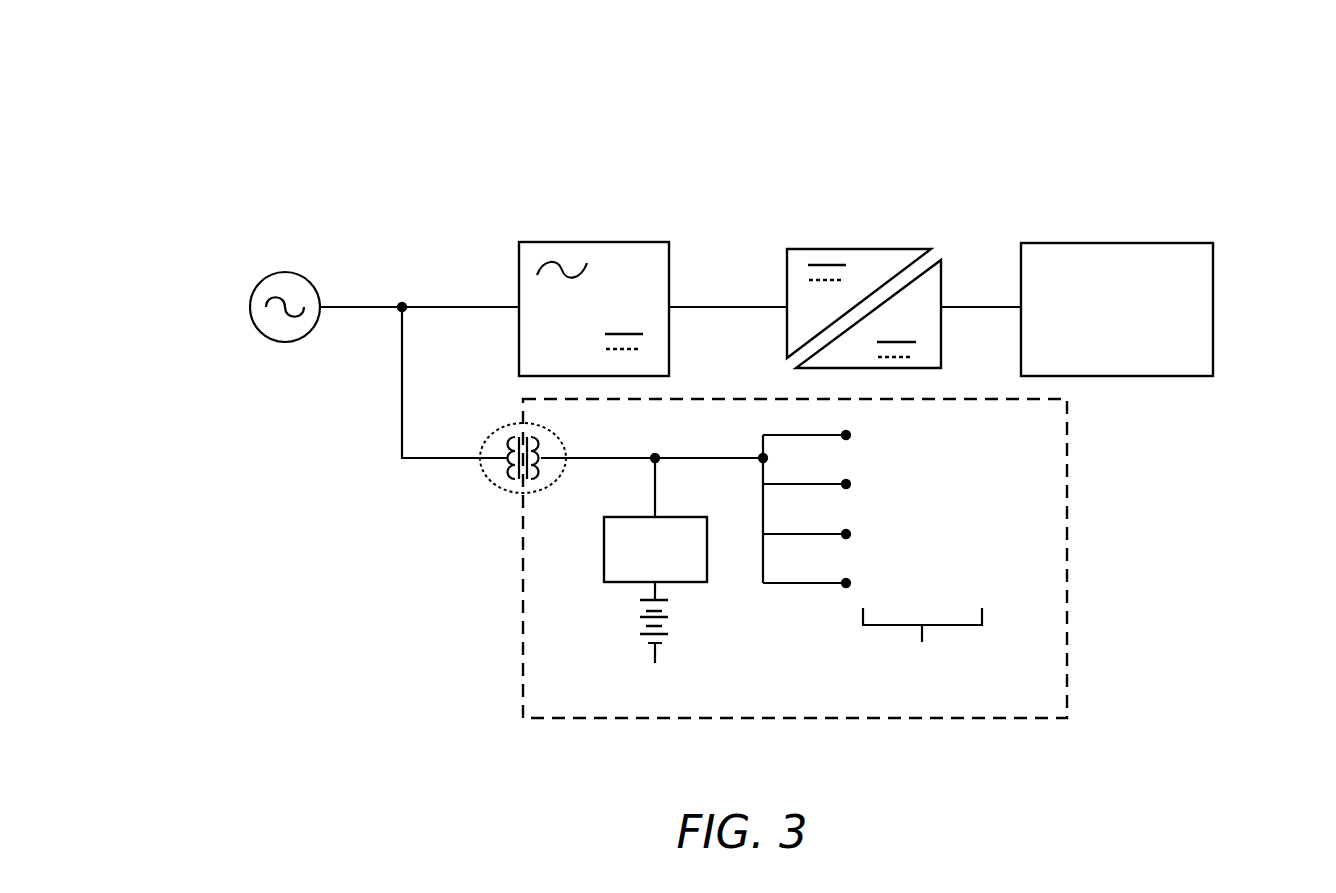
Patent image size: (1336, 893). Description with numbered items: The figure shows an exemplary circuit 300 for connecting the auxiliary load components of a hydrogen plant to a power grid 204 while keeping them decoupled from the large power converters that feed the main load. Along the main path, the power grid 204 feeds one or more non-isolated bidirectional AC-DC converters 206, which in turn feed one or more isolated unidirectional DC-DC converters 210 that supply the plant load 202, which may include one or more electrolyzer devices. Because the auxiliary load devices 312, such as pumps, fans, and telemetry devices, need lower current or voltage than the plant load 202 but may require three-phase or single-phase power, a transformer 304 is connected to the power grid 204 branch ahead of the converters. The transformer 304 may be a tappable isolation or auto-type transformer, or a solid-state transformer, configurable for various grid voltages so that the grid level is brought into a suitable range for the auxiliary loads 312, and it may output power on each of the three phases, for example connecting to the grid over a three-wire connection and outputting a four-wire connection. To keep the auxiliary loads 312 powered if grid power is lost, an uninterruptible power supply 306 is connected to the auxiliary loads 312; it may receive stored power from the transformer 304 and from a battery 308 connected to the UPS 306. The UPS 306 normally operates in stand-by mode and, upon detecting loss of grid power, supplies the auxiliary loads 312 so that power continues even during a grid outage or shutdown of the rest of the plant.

The circuit 300 is at (333, 100).
The plant load 202 is at (1123, 376).
The power grid 204 is at (277, 334).
The AC-DC converters 206 is at (522, 262).
The DC-DC converters 210 is at (792, 281).
The transformer 304 is at (505, 487).
The uninterruptible power supply 306 is at (636, 584).
The battery 308 is at (660, 636).
The auxiliary load devices 312 is at (1058, 553).